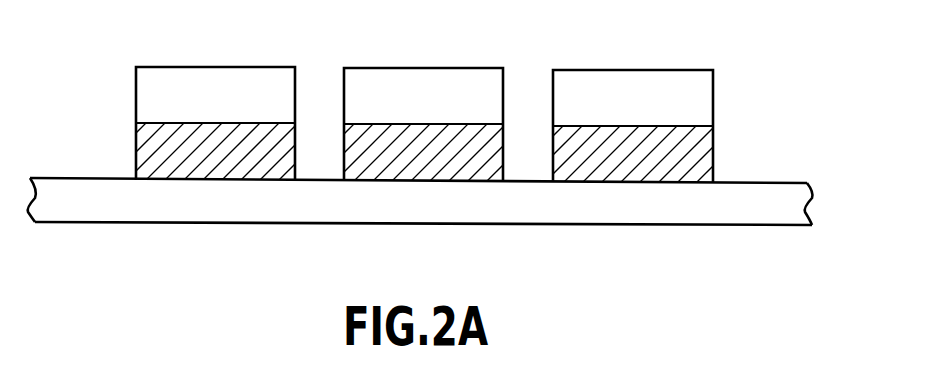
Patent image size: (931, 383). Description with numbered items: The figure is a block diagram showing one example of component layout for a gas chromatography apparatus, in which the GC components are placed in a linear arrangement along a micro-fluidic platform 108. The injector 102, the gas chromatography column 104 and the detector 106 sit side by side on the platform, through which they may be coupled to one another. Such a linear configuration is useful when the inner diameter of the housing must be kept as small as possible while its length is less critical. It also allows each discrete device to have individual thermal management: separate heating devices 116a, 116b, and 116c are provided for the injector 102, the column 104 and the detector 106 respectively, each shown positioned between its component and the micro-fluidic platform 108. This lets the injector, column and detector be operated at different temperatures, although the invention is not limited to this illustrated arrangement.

The injector 102 is at (192, 73).
The gas chromatography column 104 is at (408, 75).
The detector 106 is at (650, 77).
The micro-fluidic platform 108 is at (758, 217).
The heating device 116a is at (147, 153).
The heating device 116b is at (428, 172).
The heating device 116c is at (708, 147).